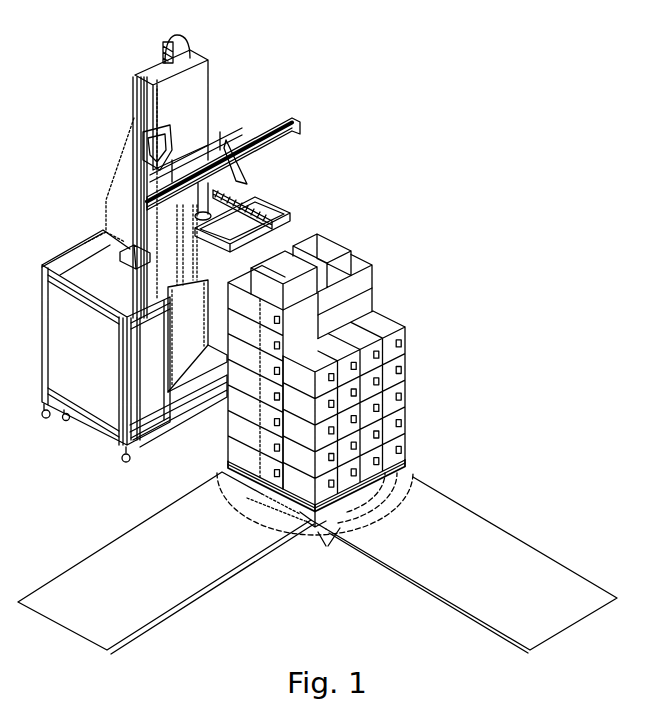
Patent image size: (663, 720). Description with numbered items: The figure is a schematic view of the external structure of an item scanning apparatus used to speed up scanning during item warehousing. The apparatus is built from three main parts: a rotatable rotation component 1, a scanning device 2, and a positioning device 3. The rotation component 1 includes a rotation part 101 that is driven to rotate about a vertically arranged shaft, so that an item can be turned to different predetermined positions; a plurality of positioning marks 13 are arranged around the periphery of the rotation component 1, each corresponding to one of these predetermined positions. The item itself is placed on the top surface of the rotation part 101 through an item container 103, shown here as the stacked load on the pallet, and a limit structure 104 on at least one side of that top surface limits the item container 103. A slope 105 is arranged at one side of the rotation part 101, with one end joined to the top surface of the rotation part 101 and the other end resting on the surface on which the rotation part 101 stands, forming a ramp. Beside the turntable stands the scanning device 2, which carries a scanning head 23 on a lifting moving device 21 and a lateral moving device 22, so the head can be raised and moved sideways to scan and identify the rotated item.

The rotation component 1 is at (412, 440).
The scanning device 2 is at (327, 152).
The positioning device 3 is at (415, 494).
The positioning marks 13 is at (257, 509).
The lifting moving device 21 is at (190, 57).
The lateral moving device 22 is at (282, 118).
The scanning head 23 is at (217, 214).
The rotation part 101 is at (420, 467).
The item container 103 is at (238, 470).
The limit structure 104 is at (340, 511).
The slope 105 is at (505, 543).